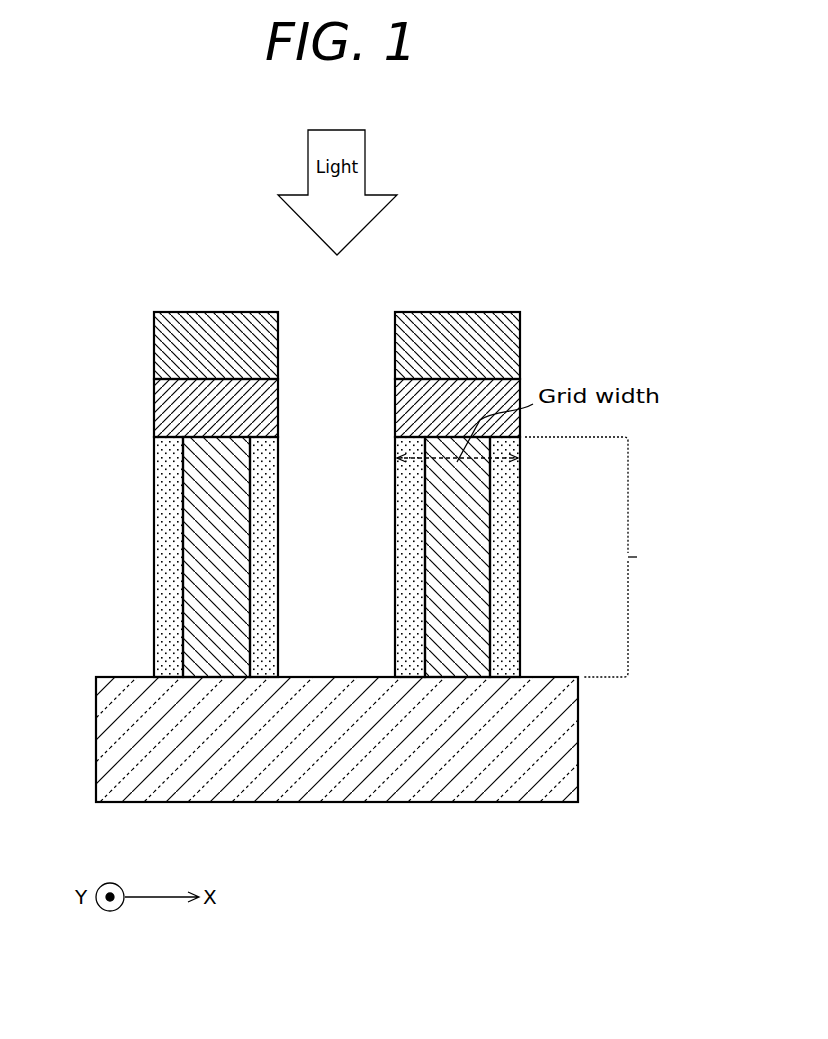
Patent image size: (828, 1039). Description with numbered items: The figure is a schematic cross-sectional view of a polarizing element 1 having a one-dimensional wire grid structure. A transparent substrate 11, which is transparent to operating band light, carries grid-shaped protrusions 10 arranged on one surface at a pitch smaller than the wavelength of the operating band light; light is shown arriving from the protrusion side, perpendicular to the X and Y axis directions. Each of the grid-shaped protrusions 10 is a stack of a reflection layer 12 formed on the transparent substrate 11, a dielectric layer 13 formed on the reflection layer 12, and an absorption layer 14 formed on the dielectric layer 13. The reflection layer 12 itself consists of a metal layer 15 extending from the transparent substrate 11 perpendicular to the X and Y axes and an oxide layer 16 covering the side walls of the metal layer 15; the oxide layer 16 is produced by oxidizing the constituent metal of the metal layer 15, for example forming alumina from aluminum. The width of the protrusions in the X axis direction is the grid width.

The polarizing element 1 is at (100, 279).
The grid-shaped protrusions 10 is at (212, 304).
The transparent substrate 11 is at (343, 772).
The reflection layer 12 is at (596, 557).
The dielectric layer 13 is at (165, 406).
The absorption layer 14 is at (165, 351).
The metal layer 15 is at (205, 500).
The oxide layer 16 is at (165, 605).